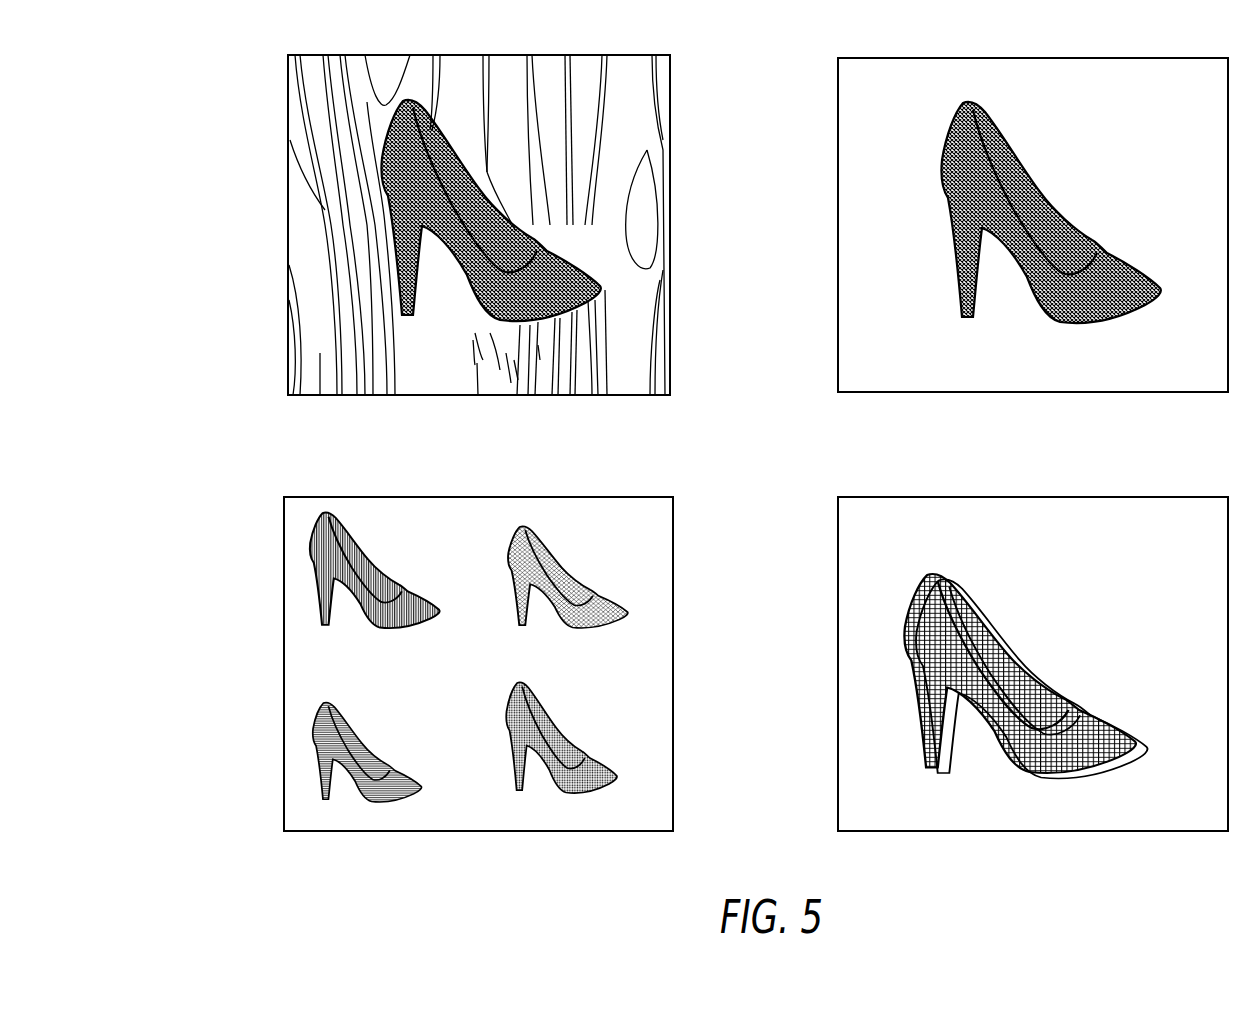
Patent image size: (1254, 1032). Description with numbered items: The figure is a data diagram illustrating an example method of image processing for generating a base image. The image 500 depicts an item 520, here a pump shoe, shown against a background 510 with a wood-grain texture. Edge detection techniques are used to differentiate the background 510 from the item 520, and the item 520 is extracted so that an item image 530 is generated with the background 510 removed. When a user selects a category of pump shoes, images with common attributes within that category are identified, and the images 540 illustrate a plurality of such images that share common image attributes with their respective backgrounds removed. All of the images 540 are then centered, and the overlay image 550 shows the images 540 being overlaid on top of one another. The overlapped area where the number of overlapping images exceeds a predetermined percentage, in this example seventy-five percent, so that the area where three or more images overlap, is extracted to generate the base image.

The image 500 is at (438, 206).
The background 510 is at (320, 208).
The item 520 is at (393, 298).
The item image 530 is at (835, 90).
The images 540 is at (280, 537).
The overlay image 550 is at (835, 533).